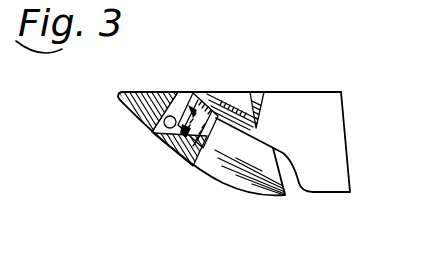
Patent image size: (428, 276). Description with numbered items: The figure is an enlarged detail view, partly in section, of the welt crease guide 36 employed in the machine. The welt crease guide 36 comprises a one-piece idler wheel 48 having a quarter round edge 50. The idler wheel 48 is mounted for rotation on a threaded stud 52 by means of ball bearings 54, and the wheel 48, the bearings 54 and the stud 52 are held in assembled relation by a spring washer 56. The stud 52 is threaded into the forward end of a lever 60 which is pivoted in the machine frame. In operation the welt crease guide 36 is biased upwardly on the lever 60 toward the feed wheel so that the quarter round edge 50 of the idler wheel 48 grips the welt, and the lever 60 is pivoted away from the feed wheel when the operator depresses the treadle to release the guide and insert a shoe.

The welt crease guide 36 is at (182, 58).
The idler wheel 48 is at (177, 157).
The quarter round edge 50 is at (125, 92).
The threaded stud 52 is at (234, 92).
The ball bearings 54 is at (165, 126).
The spring washer 56 is at (196, 106).
The lever 60 is at (309, 93).